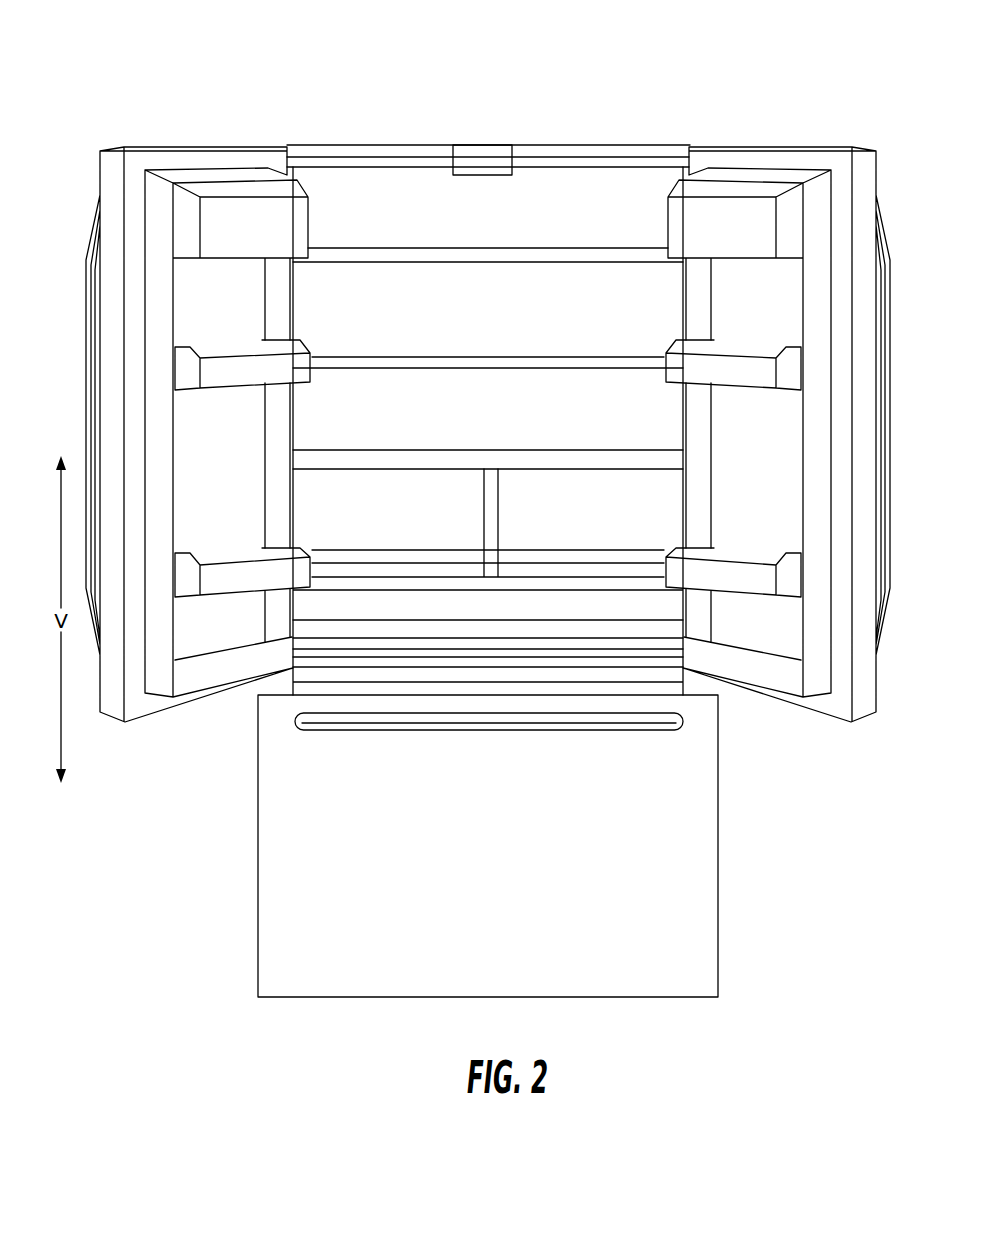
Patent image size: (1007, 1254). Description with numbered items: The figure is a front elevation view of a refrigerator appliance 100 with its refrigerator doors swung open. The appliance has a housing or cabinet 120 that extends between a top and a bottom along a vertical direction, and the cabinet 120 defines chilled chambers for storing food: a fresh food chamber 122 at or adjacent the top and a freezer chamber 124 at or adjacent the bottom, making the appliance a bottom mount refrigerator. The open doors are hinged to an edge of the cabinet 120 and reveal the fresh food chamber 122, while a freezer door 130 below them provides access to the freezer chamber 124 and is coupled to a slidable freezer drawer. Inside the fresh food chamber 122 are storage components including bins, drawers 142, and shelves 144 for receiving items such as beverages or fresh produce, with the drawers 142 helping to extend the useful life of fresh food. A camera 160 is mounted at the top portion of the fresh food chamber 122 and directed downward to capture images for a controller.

The refrigerator appliance 100 is at (686, 86).
The cabinet 120 is at (720, 693).
The fresh food chamber 122 is at (609, 186).
The freezer chamber 124 is at (678, 898).
The freezer door 130 is at (288, 909).
The drawers 142 is at (521, 570).
The shelves 144 is at (485, 255).
The camera 160 is at (487, 177).